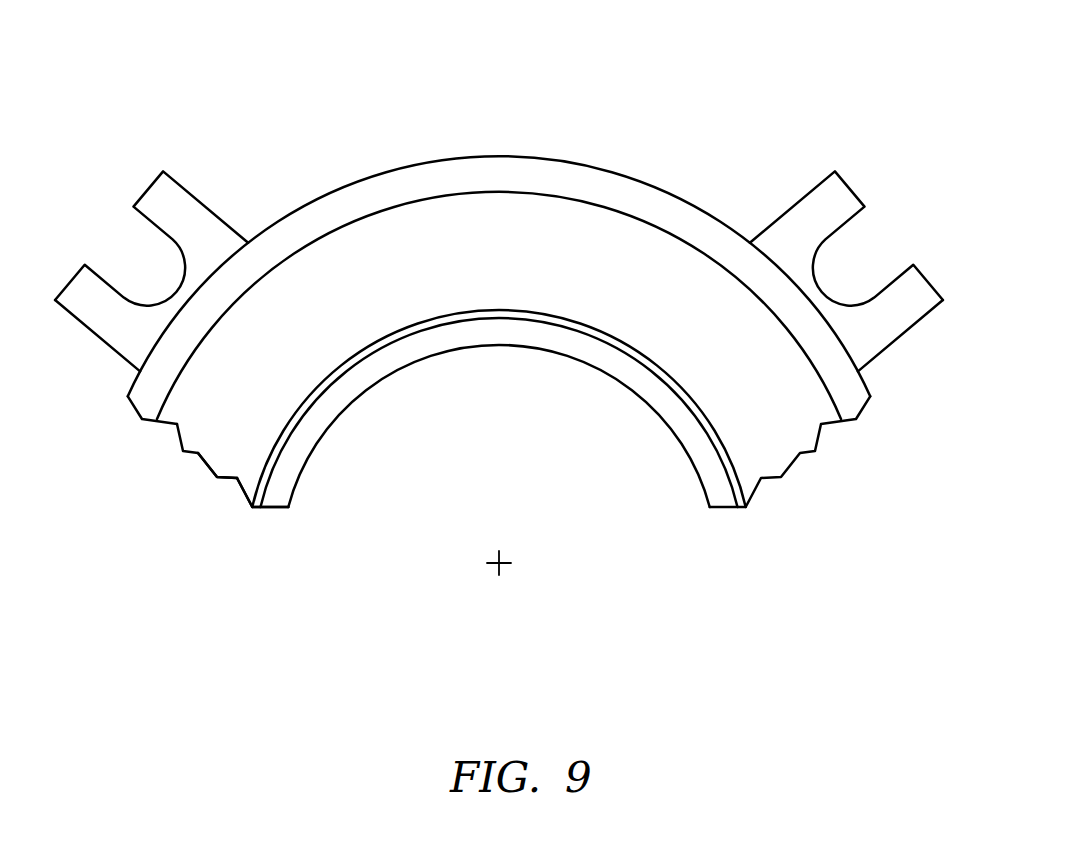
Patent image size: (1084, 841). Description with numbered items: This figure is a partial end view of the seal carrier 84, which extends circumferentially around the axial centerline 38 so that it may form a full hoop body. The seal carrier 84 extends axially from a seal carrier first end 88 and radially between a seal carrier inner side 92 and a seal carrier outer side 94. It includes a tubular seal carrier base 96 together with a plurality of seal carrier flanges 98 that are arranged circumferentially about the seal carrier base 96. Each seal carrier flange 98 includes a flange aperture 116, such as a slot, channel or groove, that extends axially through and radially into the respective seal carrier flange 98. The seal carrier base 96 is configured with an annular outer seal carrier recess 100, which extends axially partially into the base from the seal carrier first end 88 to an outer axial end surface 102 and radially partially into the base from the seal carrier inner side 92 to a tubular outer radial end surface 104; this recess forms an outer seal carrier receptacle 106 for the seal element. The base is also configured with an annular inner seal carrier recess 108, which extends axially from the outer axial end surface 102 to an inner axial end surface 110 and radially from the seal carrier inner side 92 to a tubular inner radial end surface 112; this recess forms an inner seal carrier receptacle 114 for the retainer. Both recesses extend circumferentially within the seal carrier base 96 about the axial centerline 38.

The seal carrier 84 is at (630, 96).
The axial centerline 38 is at (502, 568).
The seal carrier first end 88 is at (151, 403).
The seal carrier inner side 92 is at (652, 415).
The seal carrier outer side 94 is at (850, 189).
The seal carrier base 96 is at (887, 410).
The seal carrier flange 98 is at (90, 362).
The outer seal carrier recess 100 is at (199, 478).
The outer axial end surface 102 is at (200, 433).
The outer radial end surface 104 is at (237, 308).
The outer seal carrier receptacle 106 is at (199, 478).
The inner seal carrier recess 108 is at (257, 522).
The inner axial end surface 110 is at (357, 357).
The inner radial end surface 112 is at (317, 393).
The inner seal carrier receptacle 114 is at (257, 522).
The flange aperture 116 is at (110, 237).